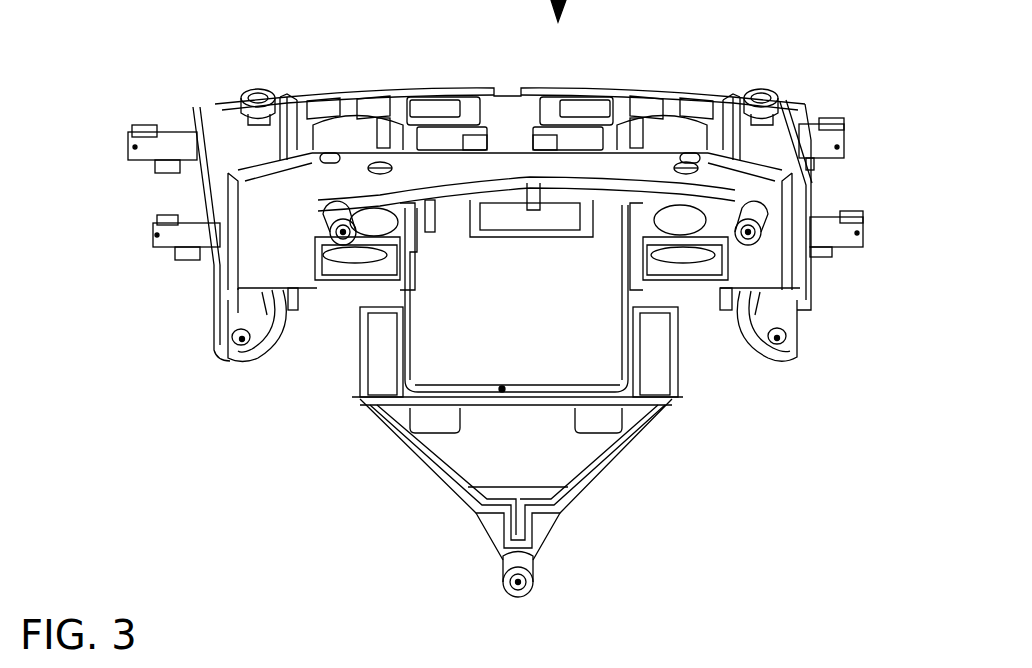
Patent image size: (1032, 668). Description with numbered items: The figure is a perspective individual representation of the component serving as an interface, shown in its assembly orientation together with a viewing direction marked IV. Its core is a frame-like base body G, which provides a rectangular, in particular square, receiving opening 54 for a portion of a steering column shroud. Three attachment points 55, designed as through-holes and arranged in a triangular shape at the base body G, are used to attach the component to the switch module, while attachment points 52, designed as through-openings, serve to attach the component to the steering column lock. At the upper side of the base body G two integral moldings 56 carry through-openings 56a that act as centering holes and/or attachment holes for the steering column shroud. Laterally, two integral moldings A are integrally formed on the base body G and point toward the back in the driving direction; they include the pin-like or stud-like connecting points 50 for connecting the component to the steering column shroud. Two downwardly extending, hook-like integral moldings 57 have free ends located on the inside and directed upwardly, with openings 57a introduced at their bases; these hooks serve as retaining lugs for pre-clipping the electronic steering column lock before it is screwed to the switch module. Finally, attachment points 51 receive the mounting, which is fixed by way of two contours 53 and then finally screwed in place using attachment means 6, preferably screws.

The attachment means 6 is at (248, 90).
The attachment points 51 is at (287, 108).
The attachment points 52 is at (386, 125).
The contours 53 is at (240, 133).
The connecting points 50 is at (134, 147).
The receiving opening 54 is at (502, 386).
The attachment points 55 is at (343, 234).
The integral moldings 56 is at (352, 176).
The through-openings 56a is at (378, 165).
The hook-like integral moldings 57 is at (233, 357).
The openings 57a is at (243, 341).
The integral moldings A is at (170, 190).
The frame-like base body G is at (660, 468).
The section line IV is at (509, 60).